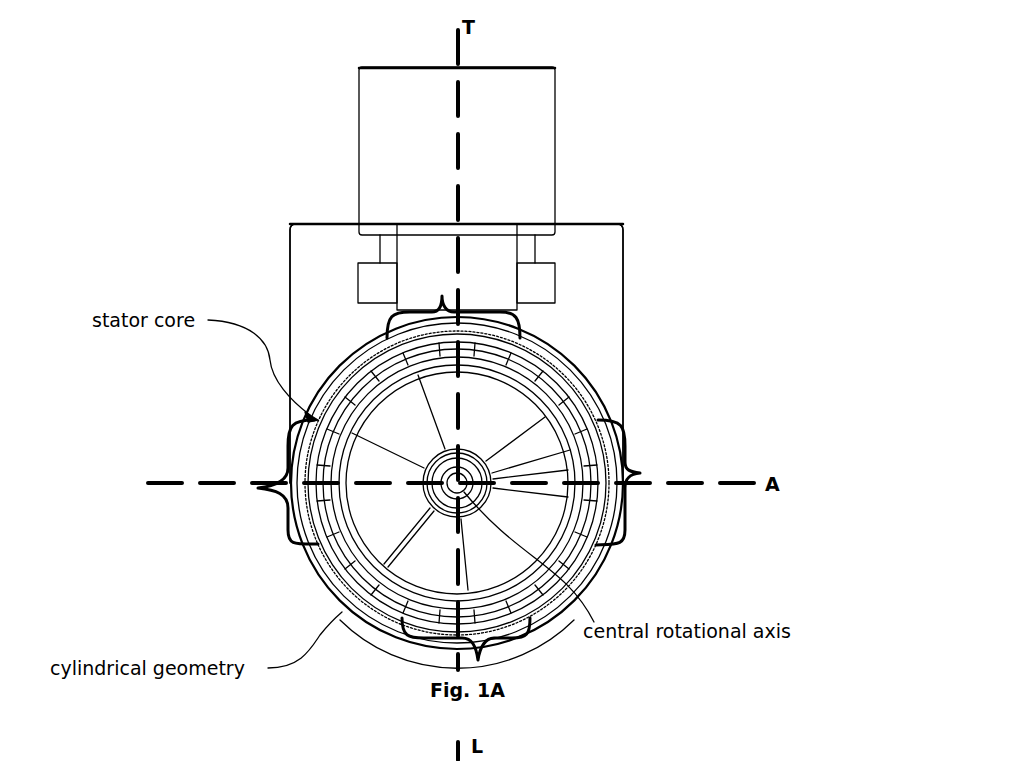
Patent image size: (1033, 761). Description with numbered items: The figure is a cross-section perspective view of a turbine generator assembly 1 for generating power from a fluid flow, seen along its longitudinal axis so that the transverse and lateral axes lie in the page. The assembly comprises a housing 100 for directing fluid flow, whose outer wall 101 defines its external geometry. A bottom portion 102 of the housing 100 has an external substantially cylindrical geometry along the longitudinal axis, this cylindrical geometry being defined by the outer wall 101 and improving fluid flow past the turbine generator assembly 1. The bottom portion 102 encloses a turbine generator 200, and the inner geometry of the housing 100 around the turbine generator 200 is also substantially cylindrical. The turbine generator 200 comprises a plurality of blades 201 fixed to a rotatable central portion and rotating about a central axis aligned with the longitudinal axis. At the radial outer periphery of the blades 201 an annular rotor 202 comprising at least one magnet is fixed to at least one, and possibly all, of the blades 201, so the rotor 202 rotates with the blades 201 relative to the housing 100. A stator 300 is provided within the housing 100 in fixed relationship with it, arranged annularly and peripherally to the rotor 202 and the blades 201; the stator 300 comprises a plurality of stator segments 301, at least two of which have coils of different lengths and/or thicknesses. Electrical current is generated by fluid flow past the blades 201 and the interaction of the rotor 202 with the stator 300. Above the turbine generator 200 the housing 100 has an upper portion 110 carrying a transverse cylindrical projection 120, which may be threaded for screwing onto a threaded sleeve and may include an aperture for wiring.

The turbine generator assembly 1 is at (272, 196).
The housing 100 is at (628, 265).
The outer wall 101 is at (303, 550).
The bottom portion 102 is at (426, 650).
The upper portion 110 is at (290, 243).
The transverse cylindrical projection 120 is at (359, 76).
The turbine generator 200 is at (628, 456).
The blades 201 is at (461, 482).
The annular rotor 202 is at (353, 378).
The stator 300 is at (304, 423).
The stator segments 301 is at (442, 294).